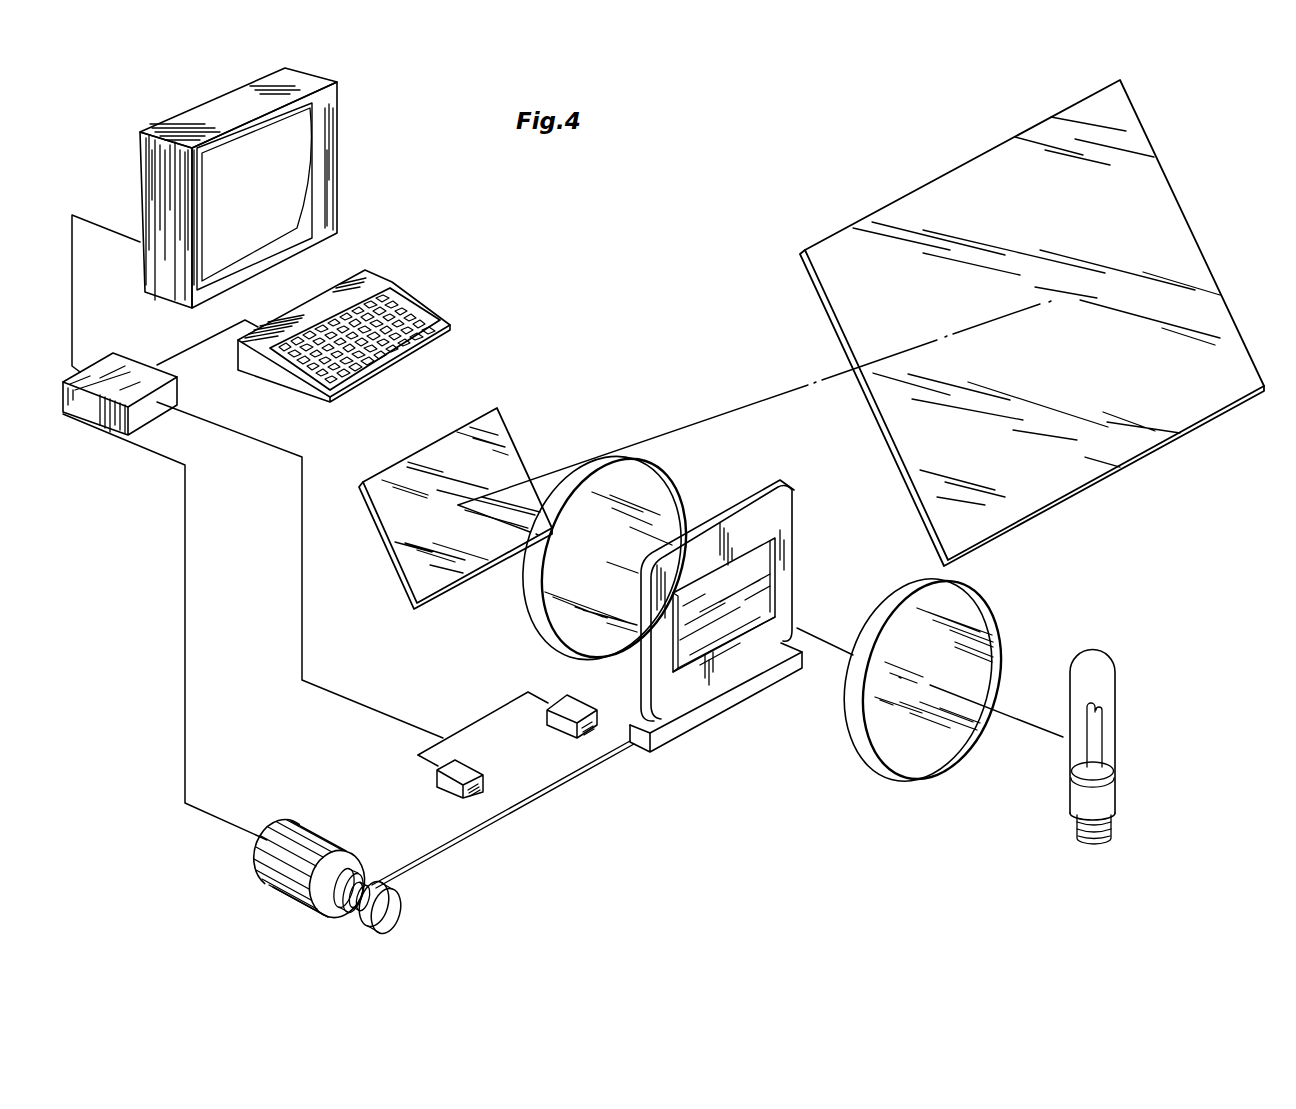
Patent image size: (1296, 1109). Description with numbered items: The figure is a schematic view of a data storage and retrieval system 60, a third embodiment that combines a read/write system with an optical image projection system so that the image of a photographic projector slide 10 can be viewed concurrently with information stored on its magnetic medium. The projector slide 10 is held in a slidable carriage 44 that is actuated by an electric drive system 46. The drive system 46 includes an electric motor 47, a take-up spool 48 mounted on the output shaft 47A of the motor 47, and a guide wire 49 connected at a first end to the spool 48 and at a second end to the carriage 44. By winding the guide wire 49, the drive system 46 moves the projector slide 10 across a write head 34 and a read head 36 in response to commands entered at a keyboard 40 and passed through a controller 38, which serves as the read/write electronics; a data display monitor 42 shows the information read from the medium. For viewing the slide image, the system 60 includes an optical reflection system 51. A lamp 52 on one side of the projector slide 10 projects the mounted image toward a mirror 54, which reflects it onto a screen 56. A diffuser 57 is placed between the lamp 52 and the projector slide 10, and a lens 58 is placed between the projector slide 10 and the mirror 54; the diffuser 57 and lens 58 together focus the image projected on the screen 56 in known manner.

The projector slide 10 is at (782, 494).
The write head 34 is at (570, 703).
The read head 36 is at (465, 772).
The controller 38 is at (117, 372).
The keyboard 40 is at (420, 310).
The data display monitor 42 is at (327, 150).
The slidable carriage 44 is at (715, 710).
The electric drive system 46 is at (318, 843).
The electric motor 47 is at (283, 893).
The output shaft 47A is at (340, 888).
The take-up spool 48 is at (395, 910).
The guide wire 49 is at (482, 830).
The optical reflection system 51 is at (1027, 540).
The lamp 52 is at (1102, 803).
The mirror 54 is at (493, 425).
The screen 56 is at (1138, 133).
The diffuser 57 is at (985, 620).
The lens 58 is at (658, 483).
The data storage and retrieval system 60 is at (663, 212).